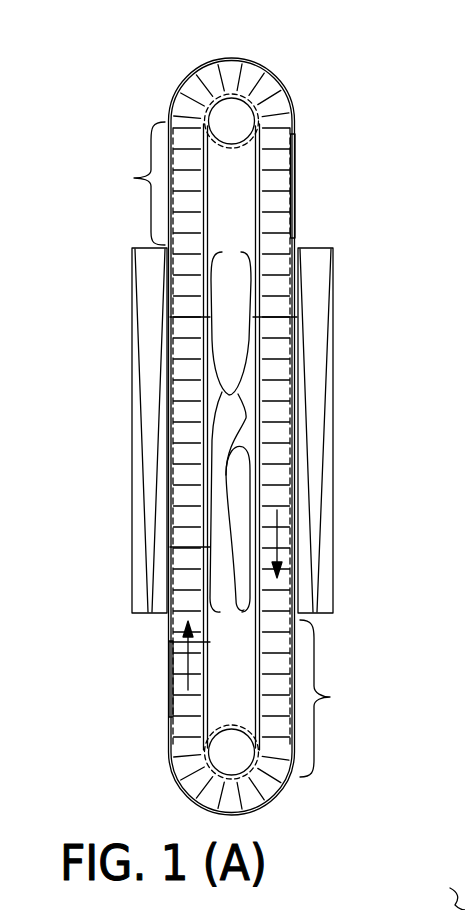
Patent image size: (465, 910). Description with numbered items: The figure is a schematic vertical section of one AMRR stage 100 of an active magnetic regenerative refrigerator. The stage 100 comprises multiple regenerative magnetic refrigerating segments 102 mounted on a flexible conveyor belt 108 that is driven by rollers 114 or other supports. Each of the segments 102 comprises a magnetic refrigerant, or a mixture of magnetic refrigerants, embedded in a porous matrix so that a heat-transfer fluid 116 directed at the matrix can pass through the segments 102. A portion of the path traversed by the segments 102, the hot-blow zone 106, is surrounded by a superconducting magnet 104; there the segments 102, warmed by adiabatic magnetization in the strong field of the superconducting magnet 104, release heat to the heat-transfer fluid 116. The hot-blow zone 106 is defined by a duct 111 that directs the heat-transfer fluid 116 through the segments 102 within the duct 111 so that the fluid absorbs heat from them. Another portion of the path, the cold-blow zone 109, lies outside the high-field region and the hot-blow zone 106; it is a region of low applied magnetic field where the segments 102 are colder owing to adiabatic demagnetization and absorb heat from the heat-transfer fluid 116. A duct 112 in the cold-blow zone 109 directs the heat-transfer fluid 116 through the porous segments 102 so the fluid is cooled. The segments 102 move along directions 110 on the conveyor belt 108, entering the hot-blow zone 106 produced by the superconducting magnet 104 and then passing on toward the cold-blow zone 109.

The AMRR stage 100 is at (387, 80).
The regenerative magnetic refrigerating segments 102 is at (212, 60).
The superconducting magnet 104 is at (131, 532).
The hot-blow zone 106 is at (235, 275).
The flexible conveyor belt 108 is at (256, 668).
The cold-blow zone 109 is at (231, 449).
The directions 110 is at (170, 666).
The duct 111 is at (172, 331).
The duct 112 is at (296, 168).
The rollers 114 is at (233, 122).
The heat-transfer fluid 116 is at (437, 885).